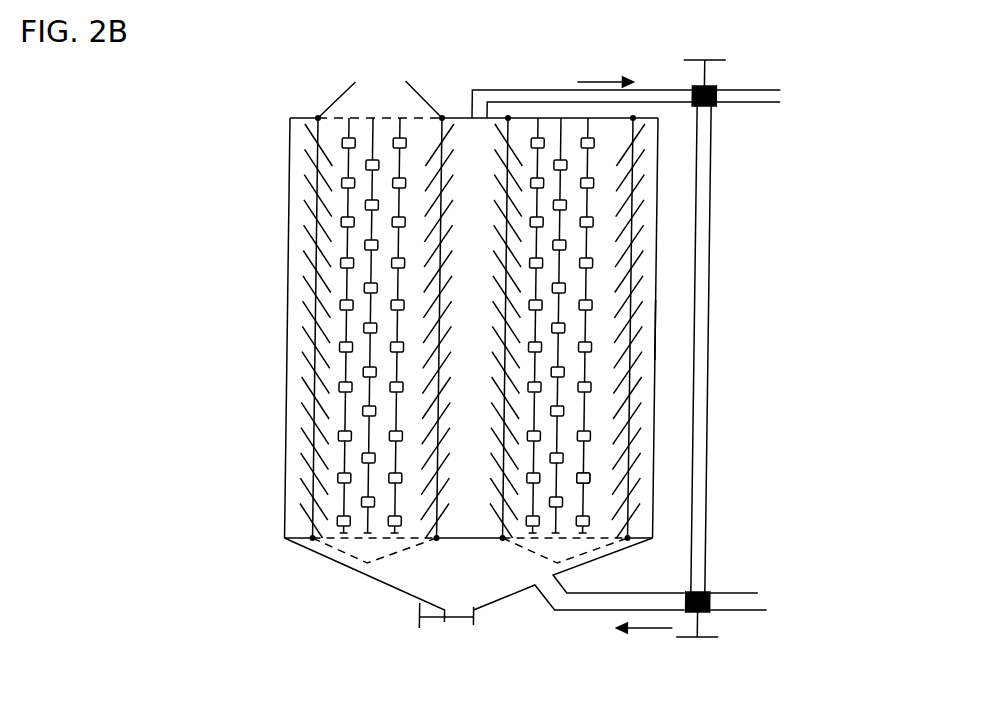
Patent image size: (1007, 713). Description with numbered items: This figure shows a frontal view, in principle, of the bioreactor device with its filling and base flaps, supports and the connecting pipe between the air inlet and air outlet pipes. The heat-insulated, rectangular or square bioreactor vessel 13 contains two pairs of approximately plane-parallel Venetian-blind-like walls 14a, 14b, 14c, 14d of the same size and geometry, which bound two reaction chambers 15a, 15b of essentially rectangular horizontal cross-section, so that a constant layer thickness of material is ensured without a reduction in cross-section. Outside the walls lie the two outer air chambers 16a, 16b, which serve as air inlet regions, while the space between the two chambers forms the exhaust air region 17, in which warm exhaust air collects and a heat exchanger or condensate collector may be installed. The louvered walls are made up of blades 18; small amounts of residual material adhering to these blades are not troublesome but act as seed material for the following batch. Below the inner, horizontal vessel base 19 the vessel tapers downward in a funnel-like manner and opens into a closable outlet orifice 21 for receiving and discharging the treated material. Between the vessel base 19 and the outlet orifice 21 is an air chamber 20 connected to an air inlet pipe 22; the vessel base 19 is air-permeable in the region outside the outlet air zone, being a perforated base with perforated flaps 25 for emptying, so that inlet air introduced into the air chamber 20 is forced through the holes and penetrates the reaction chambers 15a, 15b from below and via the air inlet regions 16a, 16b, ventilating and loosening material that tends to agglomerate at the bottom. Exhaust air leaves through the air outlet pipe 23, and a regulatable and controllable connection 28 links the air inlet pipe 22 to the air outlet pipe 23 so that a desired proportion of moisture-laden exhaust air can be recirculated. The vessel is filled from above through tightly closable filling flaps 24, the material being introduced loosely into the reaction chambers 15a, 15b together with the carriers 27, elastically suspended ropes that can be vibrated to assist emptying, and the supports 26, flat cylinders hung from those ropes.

The bioreactor vessel 13 is at (290, 132).
The Venetian-blind-like wall 14a is at (310, 210).
The Venetian-blind-like wall 14b is at (440, 290).
The Venetian-blind-like wall 14c is at (517, 290).
The Venetian-blind-like wall 14d is at (635, 372).
The reaction chamber 15a is at (335, 243).
The reaction chamber 15b is at (610, 248).
The outer air chamber 16a is at (303, 353).
The outer air chamber 16b is at (650, 330).
The exhaust air region 17 is at (470, 467).
The blades 18 is at (643, 158).
The vessel base 19 is at (290, 538).
The air chamber 20 is at (433, 577).
The outlet orifice 21 is at (480, 617).
The air inlet pipe 22 is at (744, 595).
The air outlet pipe 23 is at (505, 90).
The filling flaps 24 is at (335, 97).
The perforated flaps 25 is at (344, 552).
The supports 26 is at (588, 479).
The carriers 27 is at (591, 415).
The connection 28 is at (712, 208).